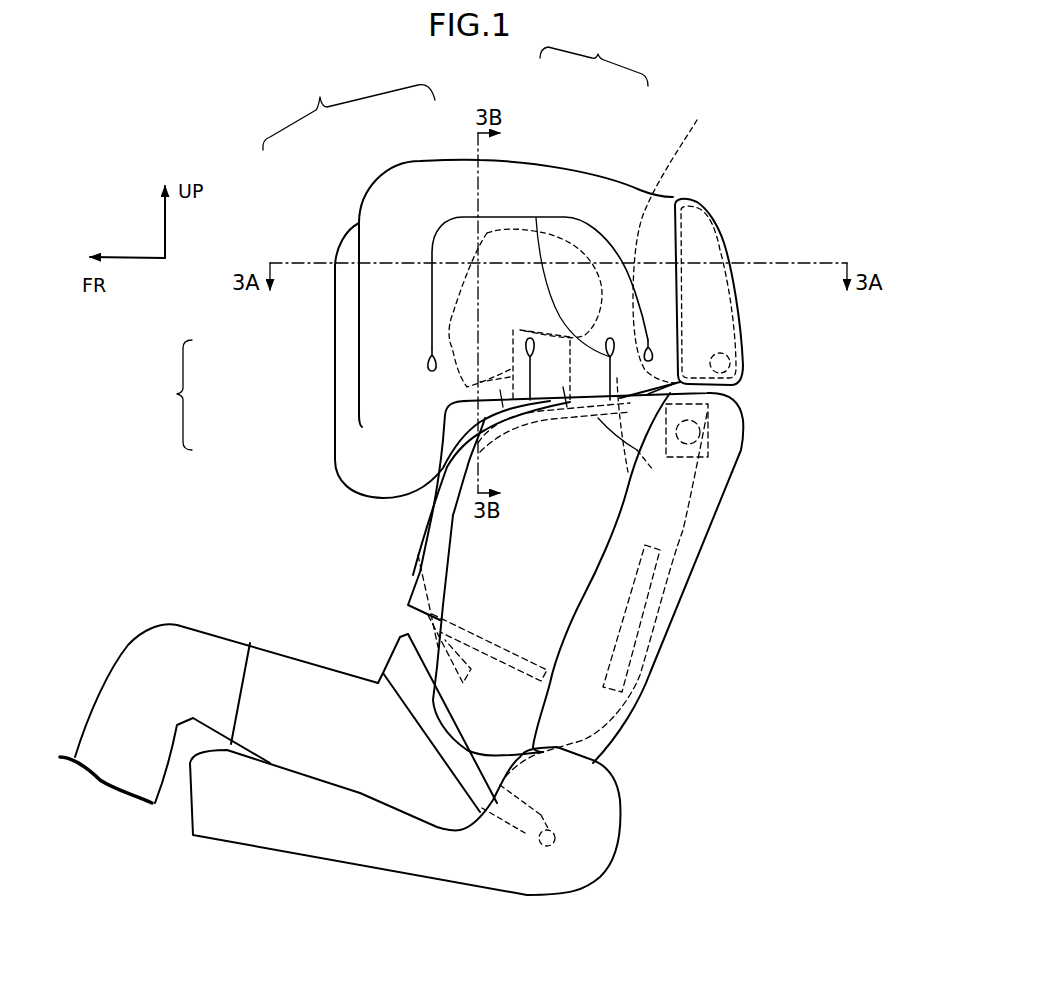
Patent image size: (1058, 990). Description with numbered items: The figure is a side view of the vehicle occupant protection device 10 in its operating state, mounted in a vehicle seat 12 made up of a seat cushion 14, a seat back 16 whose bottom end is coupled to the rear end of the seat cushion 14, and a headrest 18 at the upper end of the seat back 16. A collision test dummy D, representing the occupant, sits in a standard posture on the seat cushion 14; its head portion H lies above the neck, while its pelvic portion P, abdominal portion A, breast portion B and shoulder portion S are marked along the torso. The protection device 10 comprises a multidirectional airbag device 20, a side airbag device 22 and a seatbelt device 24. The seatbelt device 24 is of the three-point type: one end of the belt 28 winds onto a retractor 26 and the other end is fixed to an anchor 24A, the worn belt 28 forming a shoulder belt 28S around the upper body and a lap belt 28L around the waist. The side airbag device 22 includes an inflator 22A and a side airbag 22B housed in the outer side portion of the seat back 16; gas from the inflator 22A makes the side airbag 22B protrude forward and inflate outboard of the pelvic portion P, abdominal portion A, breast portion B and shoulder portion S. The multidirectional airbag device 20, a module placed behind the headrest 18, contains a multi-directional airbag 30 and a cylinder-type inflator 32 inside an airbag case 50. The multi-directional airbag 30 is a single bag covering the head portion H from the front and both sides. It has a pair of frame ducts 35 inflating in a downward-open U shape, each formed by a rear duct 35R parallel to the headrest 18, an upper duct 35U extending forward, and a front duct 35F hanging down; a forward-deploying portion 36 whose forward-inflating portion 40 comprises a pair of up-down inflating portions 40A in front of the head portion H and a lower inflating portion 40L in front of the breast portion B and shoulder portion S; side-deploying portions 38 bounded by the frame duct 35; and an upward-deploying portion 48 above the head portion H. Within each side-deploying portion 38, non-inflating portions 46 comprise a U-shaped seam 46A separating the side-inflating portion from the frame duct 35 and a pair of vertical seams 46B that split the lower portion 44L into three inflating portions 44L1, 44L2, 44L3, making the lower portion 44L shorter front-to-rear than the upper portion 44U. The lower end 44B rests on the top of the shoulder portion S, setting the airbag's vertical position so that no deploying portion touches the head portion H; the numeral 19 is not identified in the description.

The vehicle occupant protection device 10 is at (272, 472).
The vehicle seat 12 is at (655, 718).
The seat cushion 14 is at (325, 843).
The seat back 16 is at (682, 558).
The headrest 18 is at (742, 201).
The headrest pad 19 is at (671, 239).
The multidirectional airbag device 20 is at (715, 152).
The side airbag device 22 is at (470, 543).
The inflator 22A is at (627, 633).
The side airbag 22B is at (446, 552).
The seatbelt device 24 is at (381, 645).
The anchor 24A is at (553, 823).
The retractor 26 is at (708, 445).
The belt 28 is at (416, 513).
The lap belt 28L is at (410, 690).
The shoulder belt 28S is at (562, 398).
The multi-directional airbag 30 is at (349, 111).
The inflator 32 is at (730, 363).
The frame duct 35 is at (372, 194).
The front duct 35F is at (368, 256).
The rear duct 35R is at (580, 263).
The upper duct 35U is at (562, 182).
The forward-deploying portion 36 is at (352, 224).
The side-deploying portion 38 is at (434, 228).
The forward-inflating portion 40 is at (167, 395).
The up-down inflating portion 40A is at (345, 328).
The lower inflating portion 40L is at (345, 462).
The lower portion 44L is at (531, 318).
The inflating portion 44L1 is at (500, 400).
The inflating portion 44L2 is at (565, 390).
The inflating portion 44L3 is at (627, 360).
The upper portion 44U is at (487, 233).
The lower end 44B is at (487, 428).
The non-inflating portions 46 is at (594, 57).
The U-shaped seam 46A is at (505, 217).
The vertical seam 46B is at (536, 218).
The upward-deploying portion 48 is at (434, 181).
The airbag case 50 is at (754, 338).
The abdominal portion A is at (468, 603).
The breast portion B is at (452, 490).
The collision test dummy D is at (266, 638).
The head portion H is at (718, 241).
The pelvic portion P is at (490, 725).
The shoulder portion S is at (634, 438).